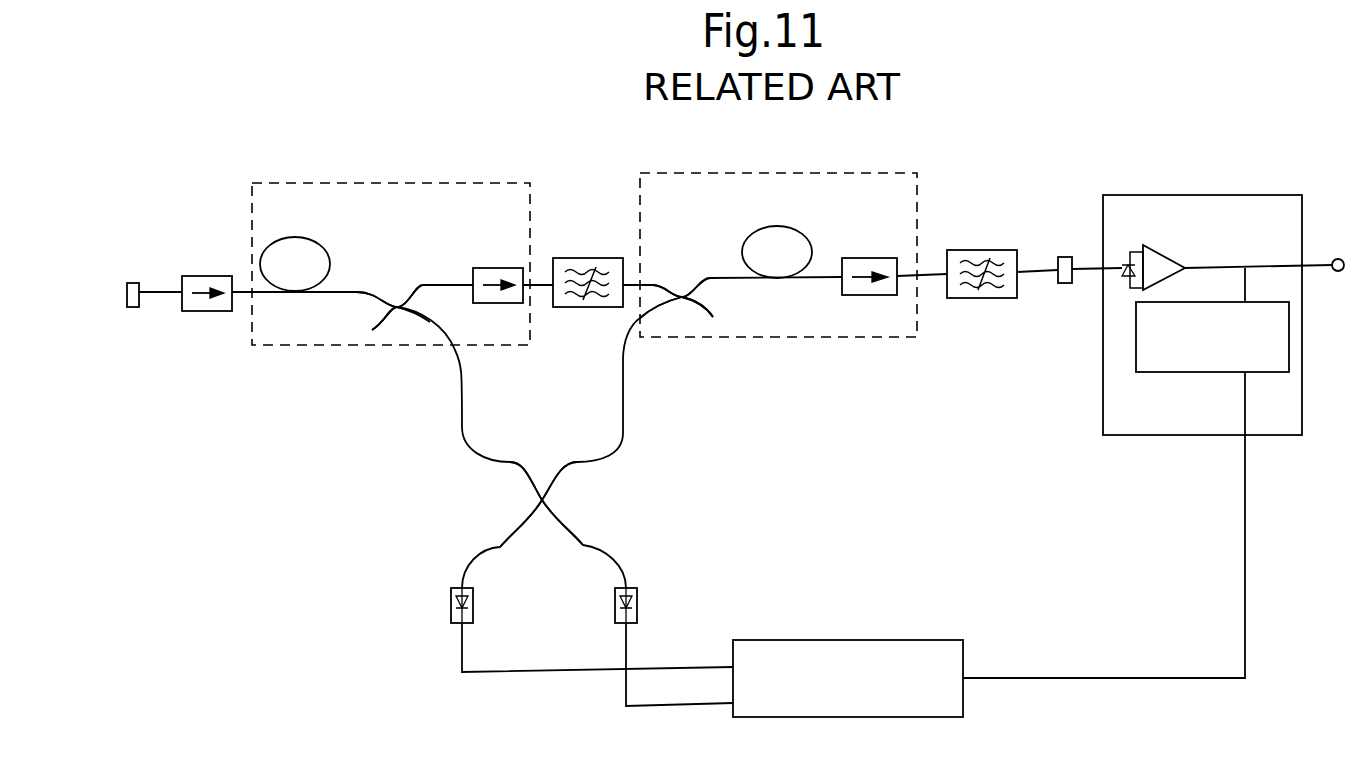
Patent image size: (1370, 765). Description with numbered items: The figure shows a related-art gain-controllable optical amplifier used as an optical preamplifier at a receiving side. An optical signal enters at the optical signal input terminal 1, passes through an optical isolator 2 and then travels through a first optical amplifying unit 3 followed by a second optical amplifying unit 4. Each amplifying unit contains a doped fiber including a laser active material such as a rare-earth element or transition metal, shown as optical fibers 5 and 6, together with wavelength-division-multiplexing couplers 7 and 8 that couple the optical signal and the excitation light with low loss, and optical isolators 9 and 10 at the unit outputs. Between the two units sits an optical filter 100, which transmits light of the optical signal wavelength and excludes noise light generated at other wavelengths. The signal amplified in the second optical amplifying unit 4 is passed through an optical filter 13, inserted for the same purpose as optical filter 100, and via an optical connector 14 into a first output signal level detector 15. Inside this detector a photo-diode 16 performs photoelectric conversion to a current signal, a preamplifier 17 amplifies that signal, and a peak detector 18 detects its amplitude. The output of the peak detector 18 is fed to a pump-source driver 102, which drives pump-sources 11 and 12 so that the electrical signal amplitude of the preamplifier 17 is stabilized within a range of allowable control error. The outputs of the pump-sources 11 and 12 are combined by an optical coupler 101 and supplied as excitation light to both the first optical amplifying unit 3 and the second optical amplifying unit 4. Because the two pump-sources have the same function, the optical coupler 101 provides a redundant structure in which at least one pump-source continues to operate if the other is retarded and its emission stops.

The optical signal input terminal 1 is at (135, 283).
The optical isolator 2 is at (205, 276).
The first optical amplifying unit 3 is at (383, 181).
The second optical amplifying unit 4 is at (757, 172).
The optical fiber (doped fiber) 5 is at (300, 238).
The optical fiber (doped fiber) 6 is at (795, 227).
The wavelength-division-multiplexing coupler 7 is at (395, 298).
The wavelength-division-multiplexing coupler 8 is at (682, 290).
The optical isolator 9 is at (478, 268).
The optical isolator 10 is at (855, 258).
The pump-source 11 is at (474, 606).
The pump-source 12 is at (638, 603).
The optical filter 13 is at (982, 250).
The optical connector 14 is at (1068, 283).
The first output signal level detector 15 is at (1202, 290).
The photo-diode 16 is at (1129, 252).
The preamplifier 17 is at (1167, 250).
The peak detector 18 is at (1191, 373).
The optical filter 100 is at (568, 258).
The optical coupler 101 is at (543, 473).
The pump-source driver 102 is at (793, 640).